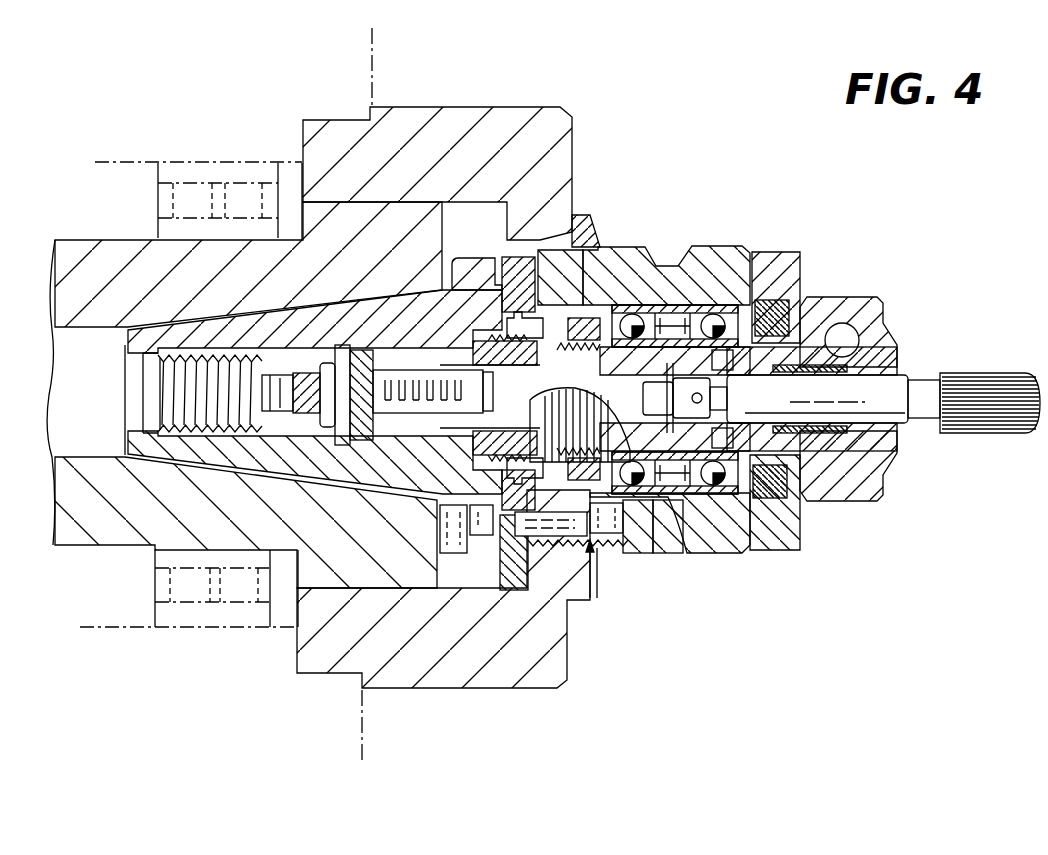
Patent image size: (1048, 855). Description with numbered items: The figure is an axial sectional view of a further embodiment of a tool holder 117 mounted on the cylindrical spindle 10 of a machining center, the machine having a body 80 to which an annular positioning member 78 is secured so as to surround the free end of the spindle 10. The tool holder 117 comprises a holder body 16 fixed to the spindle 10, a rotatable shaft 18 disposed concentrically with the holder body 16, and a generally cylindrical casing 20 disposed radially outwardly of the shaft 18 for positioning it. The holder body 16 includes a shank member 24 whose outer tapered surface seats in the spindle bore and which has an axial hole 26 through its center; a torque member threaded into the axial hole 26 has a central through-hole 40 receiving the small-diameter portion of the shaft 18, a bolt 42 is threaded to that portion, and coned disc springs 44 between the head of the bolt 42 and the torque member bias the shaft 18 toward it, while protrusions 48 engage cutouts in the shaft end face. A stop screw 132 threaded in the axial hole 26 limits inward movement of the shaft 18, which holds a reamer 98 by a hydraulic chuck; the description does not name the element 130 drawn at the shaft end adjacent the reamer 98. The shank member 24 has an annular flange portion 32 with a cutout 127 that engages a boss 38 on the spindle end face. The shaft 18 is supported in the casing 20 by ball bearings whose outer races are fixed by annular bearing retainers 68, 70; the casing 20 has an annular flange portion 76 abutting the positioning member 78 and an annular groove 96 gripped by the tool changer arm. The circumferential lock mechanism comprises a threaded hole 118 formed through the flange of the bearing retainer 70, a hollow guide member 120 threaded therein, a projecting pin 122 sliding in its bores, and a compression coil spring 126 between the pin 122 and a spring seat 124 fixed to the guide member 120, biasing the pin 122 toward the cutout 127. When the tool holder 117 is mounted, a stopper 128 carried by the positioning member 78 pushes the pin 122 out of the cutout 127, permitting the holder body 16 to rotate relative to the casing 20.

The spindle 10 is at (88, 250).
The holder body 16 is at (283, 294).
The rotatable shaft 18 is at (666, 335).
The casing 20 is at (727, 240).
The shank member 24 is at (333, 462).
The axial hole 26 is at (217, 424).
The annular flange portion 32 is at (468, 258).
The boss 38 is at (453, 555).
The central through-hole 40 is at (542, 346).
The bolt 42 is at (407, 387).
The coned disc springs 44 is at (355, 436).
The protrusions 48 is at (522, 312).
The bearing retainer 68 is at (762, 262).
The bearing retainer 70 is at (578, 266).
The annular flange portion 76 is at (588, 222).
The positioning member 78 is at (462, 682).
The body 80 is at (297, 74).
The annular groove 96 is at (684, 262).
The reamer 98 is at (1007, 420).
The tool holder 117 is at (626, 170).
The threaded hole 118 is at (603, 540).
The guide member 120 is at (587, 586).
The projecting pin 122 is at (550, 525).
The spring seat 124 is at (640, 540).
The compression coil spring 126 is at (660, 553).
The cutout 127 is at (480, 535).
The stopper 128 is at (492, 560).
The shaft 130 is at (869, 441).
The stop screw 132 is at (306, 438).